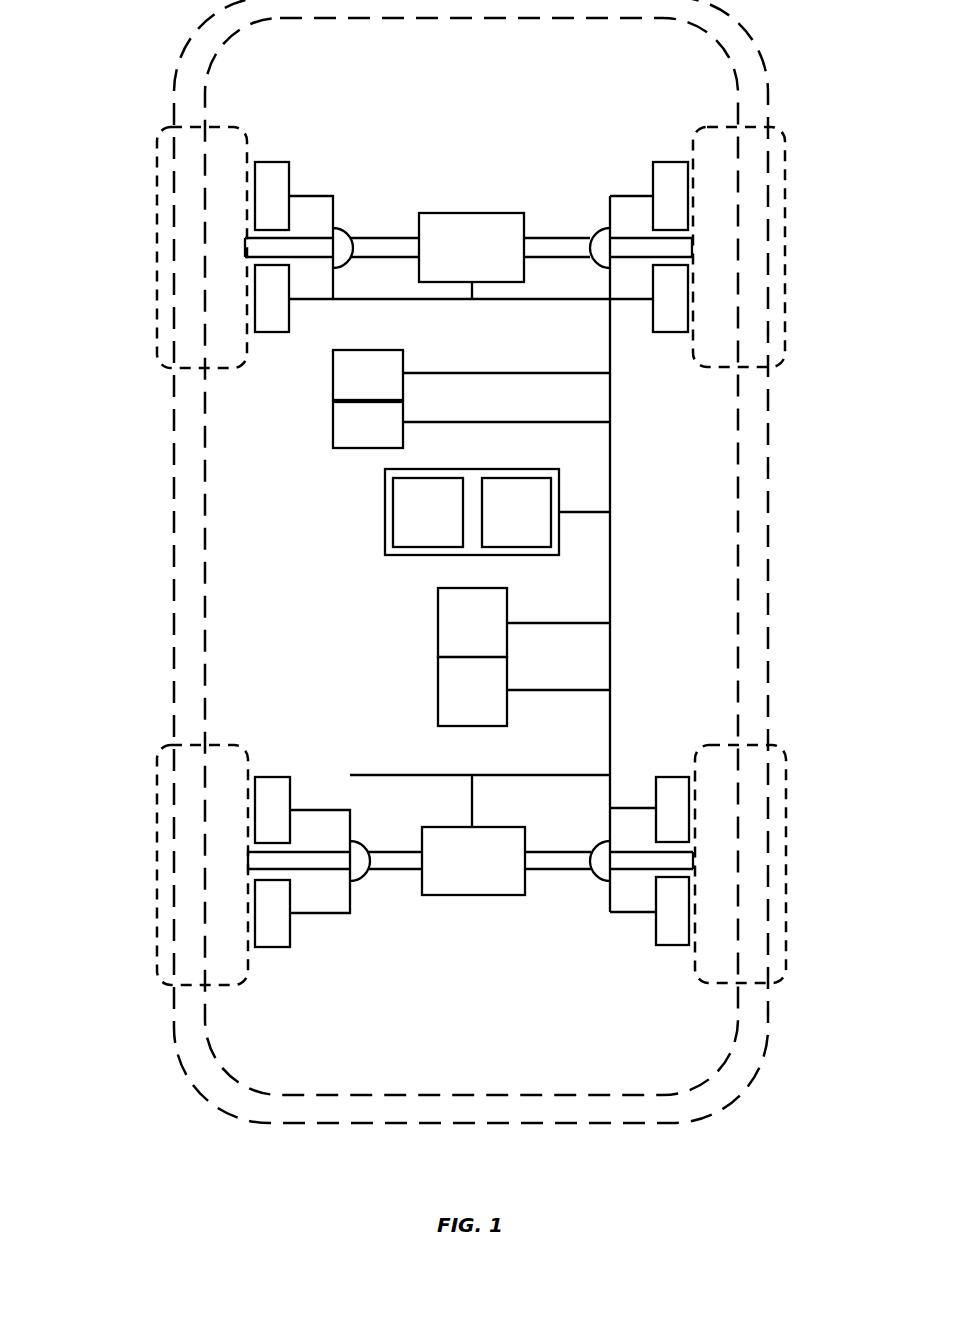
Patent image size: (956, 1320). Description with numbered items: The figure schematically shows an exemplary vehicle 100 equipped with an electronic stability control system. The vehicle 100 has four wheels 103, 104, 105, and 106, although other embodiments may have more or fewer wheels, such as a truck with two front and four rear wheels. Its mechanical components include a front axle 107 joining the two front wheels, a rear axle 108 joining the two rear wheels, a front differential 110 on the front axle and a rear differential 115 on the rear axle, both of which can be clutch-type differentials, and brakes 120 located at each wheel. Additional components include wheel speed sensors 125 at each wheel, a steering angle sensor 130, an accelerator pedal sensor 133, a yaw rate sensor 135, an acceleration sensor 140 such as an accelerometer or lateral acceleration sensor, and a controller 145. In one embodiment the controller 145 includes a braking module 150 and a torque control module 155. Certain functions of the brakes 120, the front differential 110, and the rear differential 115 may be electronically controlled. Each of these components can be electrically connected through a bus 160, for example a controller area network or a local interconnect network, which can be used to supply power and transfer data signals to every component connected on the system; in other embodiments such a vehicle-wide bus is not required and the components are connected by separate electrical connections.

The vehicle 100 is at (120, 1072).
The wheel 103 is at (180, 174).
The wheel 104 is at (765, 173).
The wheel 105 is at (180, 792).
The wheel 106 is at (768, 788).
The front axle 107 is at (395, 250).
The rear axle 108 is at (395, 862).
The front differential 110 is at (453, 260).
The rear differential 115 is at (453, 874).
The brakes 120 is at (272, 312).
The wheel speed sensors 125 is at (272, 177).
The steering angle sensor 130 is at (349, 386).
The accelerator pedal sensor 133 is at (349, 436).
The yaw rate sensor 135 is at (453, 635).
The acceleration sensor 140 is at (453, 702).
The controller 145 is at (474, 536).
The braking module 150 is at (409, 524).
The torque control module 155 is at (497, 524).
The bus 160 is at (612, 603).